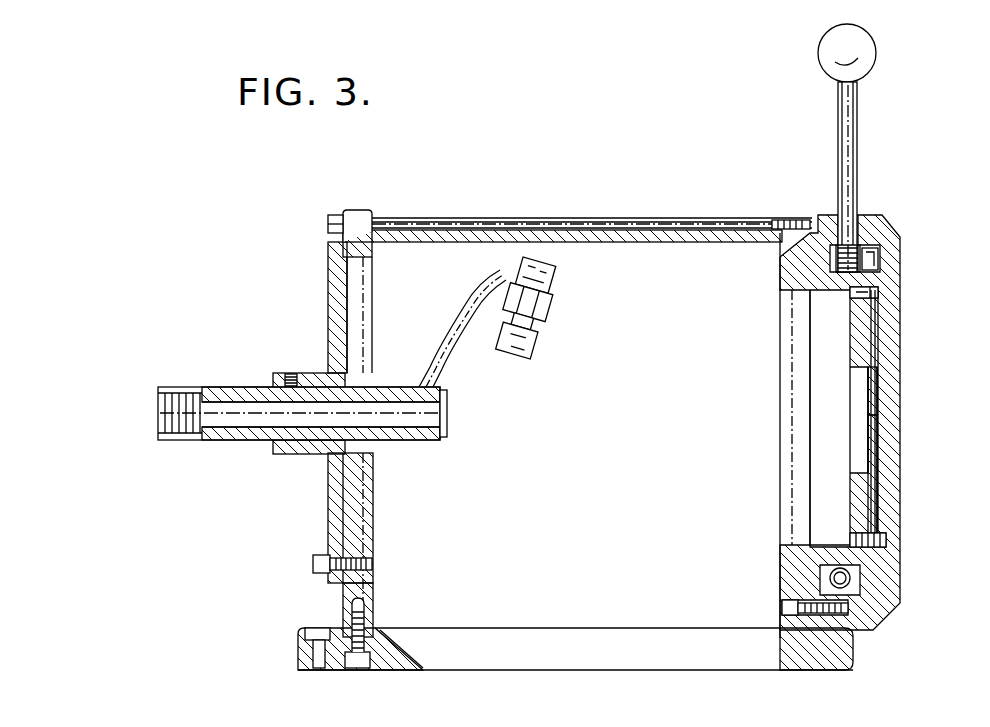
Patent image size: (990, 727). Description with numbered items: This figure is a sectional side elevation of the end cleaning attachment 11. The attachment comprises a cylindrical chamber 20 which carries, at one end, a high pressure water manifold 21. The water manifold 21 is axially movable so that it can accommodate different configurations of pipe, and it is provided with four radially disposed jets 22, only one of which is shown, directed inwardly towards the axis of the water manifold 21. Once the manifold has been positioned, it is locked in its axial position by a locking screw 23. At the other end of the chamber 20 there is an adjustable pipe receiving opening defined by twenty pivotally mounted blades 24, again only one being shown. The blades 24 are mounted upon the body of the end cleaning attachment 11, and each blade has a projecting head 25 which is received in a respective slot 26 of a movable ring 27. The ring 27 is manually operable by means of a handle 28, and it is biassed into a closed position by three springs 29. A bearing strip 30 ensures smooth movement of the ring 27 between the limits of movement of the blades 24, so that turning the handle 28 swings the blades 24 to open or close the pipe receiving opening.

The end cleaning attachment 11 is at (600, 210).
The cylindrical chamber 20 is at (658, 238).
The high pressure water manifold 21 is at (250, 436).
The radially disposed jets 22 is at (541, 312).
The locking screw 23 is at (291, 373).
The pivotally mounted blades 24 is at (873, 386).
The projecting head 25 is at (870, 277).
The slot 26 is at (872, 250).
The movable ring 27 is at (862, 247).
The handle 28 is at (852, 108).
The springs 29 is at (866, 615).
The bearing strip 30 is at (866, 541).